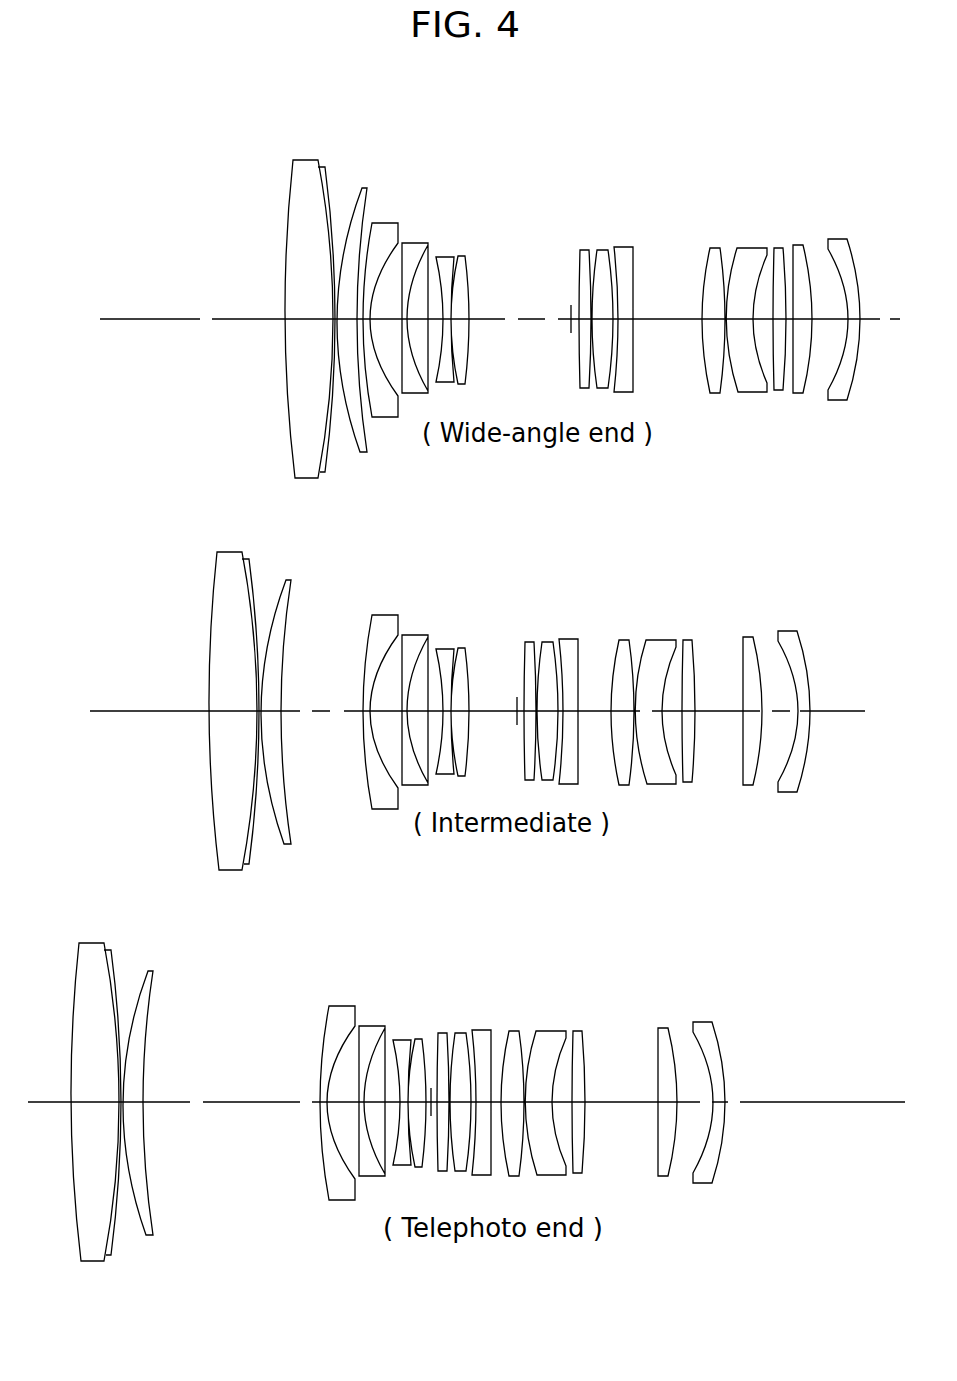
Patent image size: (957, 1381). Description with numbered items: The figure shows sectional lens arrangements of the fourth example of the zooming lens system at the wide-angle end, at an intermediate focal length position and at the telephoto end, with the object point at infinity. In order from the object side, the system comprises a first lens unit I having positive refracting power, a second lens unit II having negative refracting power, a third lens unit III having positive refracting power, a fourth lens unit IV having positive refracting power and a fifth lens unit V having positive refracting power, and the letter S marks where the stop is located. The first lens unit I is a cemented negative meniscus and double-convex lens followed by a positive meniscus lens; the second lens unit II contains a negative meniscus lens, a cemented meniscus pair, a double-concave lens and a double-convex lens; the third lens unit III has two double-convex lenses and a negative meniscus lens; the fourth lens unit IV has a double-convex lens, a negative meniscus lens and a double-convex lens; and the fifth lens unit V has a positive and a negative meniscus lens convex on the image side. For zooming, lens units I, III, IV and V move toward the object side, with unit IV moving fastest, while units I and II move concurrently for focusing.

The first lens unit I is at (72, 930).
The second lens unit II is at (423, 930).
The third lens unit III is at (490, 930).
The fourth lens unit IV is at (583, 930).
The fifth lens unit V is at (715, 930).
The stop S is at (570, 310).